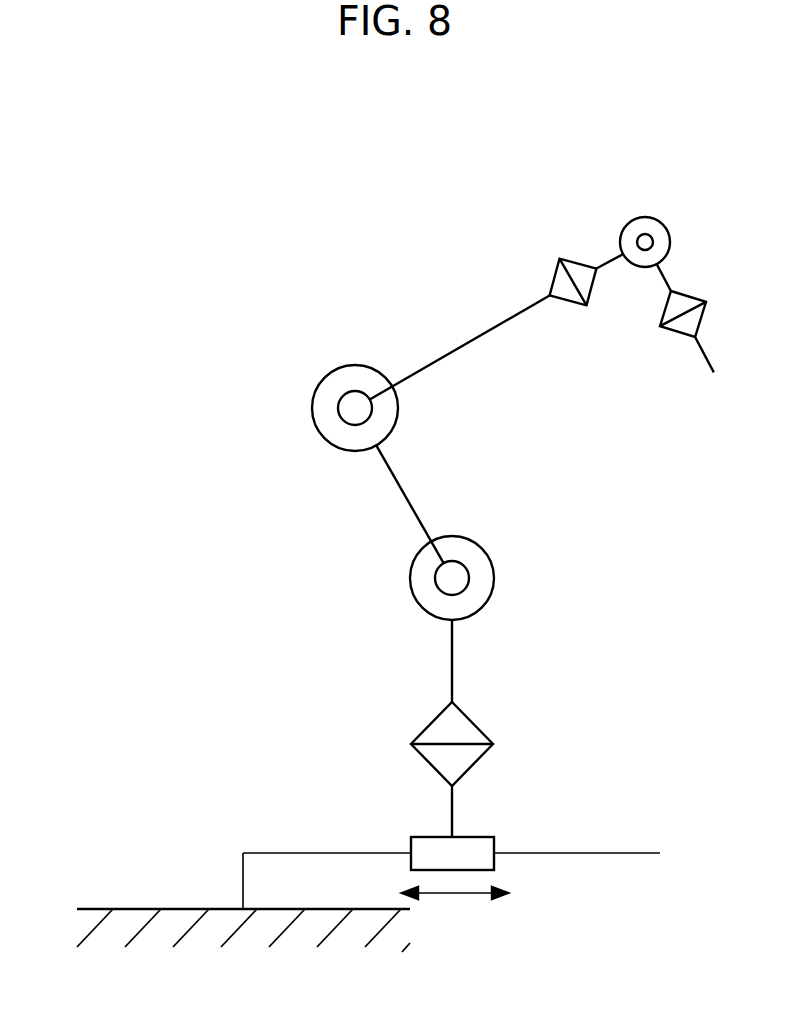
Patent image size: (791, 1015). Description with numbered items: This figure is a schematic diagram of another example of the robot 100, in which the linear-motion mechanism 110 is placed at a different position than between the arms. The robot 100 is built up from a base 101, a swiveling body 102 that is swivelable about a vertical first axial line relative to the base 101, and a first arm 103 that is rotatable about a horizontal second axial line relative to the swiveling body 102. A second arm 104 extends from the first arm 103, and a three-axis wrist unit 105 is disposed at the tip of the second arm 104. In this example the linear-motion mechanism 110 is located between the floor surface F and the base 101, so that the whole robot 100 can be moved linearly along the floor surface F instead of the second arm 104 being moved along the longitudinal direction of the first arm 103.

The robot 100 is at (194, 207).
The base 101 is at (452, 806).
The swiveling body 102 is at (452, 663).
The first arm 103 is at (398, 490).
The second arm 104 is at (460, 347).
The three-axis wrist unit 105 is at (598, 254).
The linear-motion mechanism 110 is at (494, 830).
The floor surface F is at (133, 908).